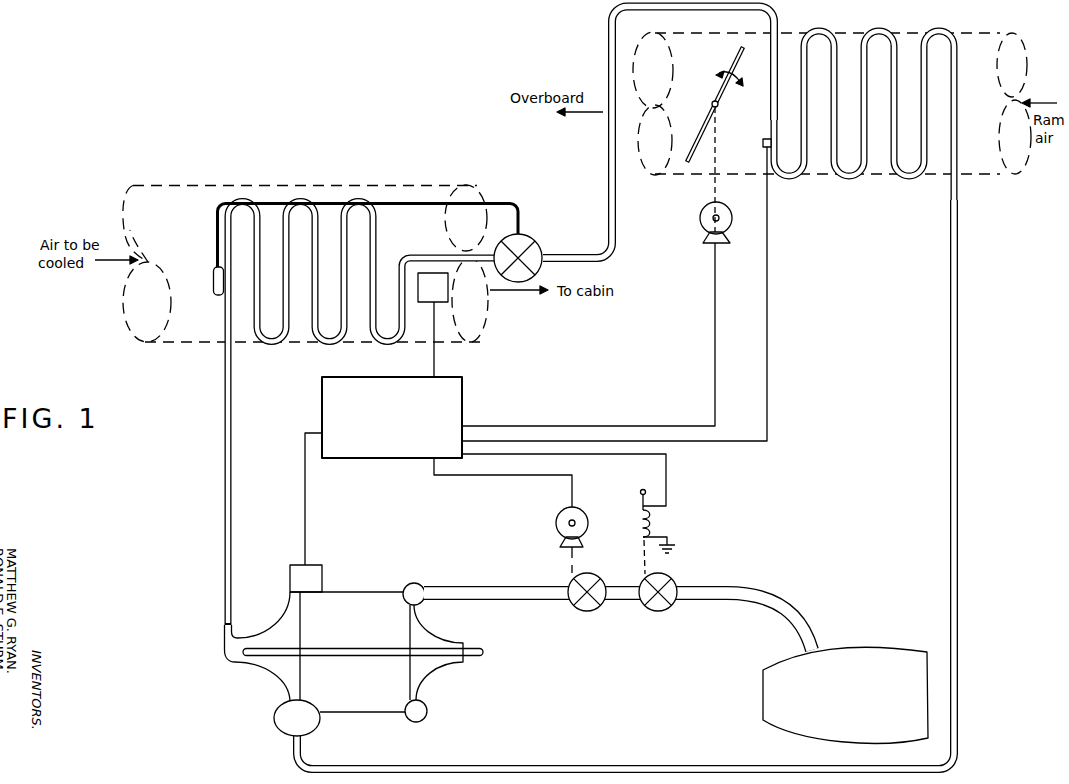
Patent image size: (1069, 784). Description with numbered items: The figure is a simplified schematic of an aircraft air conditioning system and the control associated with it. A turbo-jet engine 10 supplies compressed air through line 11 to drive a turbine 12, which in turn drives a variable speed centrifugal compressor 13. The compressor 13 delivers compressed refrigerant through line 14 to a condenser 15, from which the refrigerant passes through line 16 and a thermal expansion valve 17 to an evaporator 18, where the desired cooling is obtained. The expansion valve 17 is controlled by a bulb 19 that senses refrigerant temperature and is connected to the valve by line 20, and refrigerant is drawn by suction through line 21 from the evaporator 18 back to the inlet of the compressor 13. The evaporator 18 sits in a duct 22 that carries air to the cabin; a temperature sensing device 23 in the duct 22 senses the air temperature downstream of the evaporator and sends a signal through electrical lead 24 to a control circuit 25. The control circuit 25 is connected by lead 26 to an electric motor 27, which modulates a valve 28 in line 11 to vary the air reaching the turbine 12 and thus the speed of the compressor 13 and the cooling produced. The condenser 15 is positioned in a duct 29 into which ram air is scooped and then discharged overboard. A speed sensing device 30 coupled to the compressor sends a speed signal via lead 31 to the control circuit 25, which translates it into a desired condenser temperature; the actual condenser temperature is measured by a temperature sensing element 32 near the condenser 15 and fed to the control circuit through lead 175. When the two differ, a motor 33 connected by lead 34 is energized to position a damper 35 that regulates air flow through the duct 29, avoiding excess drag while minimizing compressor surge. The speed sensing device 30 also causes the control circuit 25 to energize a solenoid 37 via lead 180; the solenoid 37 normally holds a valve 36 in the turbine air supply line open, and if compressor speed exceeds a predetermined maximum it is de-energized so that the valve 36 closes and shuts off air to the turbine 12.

The turbo-jet engine 10 is at (877, 645).
The line 11 is at (728, 585).
The turbine 12 is at (432, 633).
The variable speed centrifugal compressor 13 is at (343, 592).
The line 14 is at (600, 763).
The condenser 15 is at (845, 164).
The line 16 is at (700, 9).
The expansion valve 17 is at (525, 233).
The evaporator 18 is at (318, 333).
The bulb 19 is at (212, 275).
The line 20 is at (500, 193).
The line 21 is at (222, 478).
The duct 22 is at (228, 185).
The temperature sensing device 23 is at (448, 296).
The electrical lead 24 is at (433, 358).
The control circuit 25 is at (462, 403).
The lead 26 is at (573, 498).
The electric motor 27 is at (558, 514).
The valve 28 is at (593, 612).
The duct 29 is at (900, 33).
The speed sensing device 30 is at (316, 565).
The lead 31 is at (306, 497).
The temperature sensing element 32 is at (763, 143).
The motor 33 is at (703, 210).
The lead 34 is at (578, 424).
The damper 35 is at (733, 61).
The valve 36 is at (673, 573).
The solenoid 37 is at (648, 522).
The lead 175 is at (737, 441).
The lead 180 is at (667, 480).